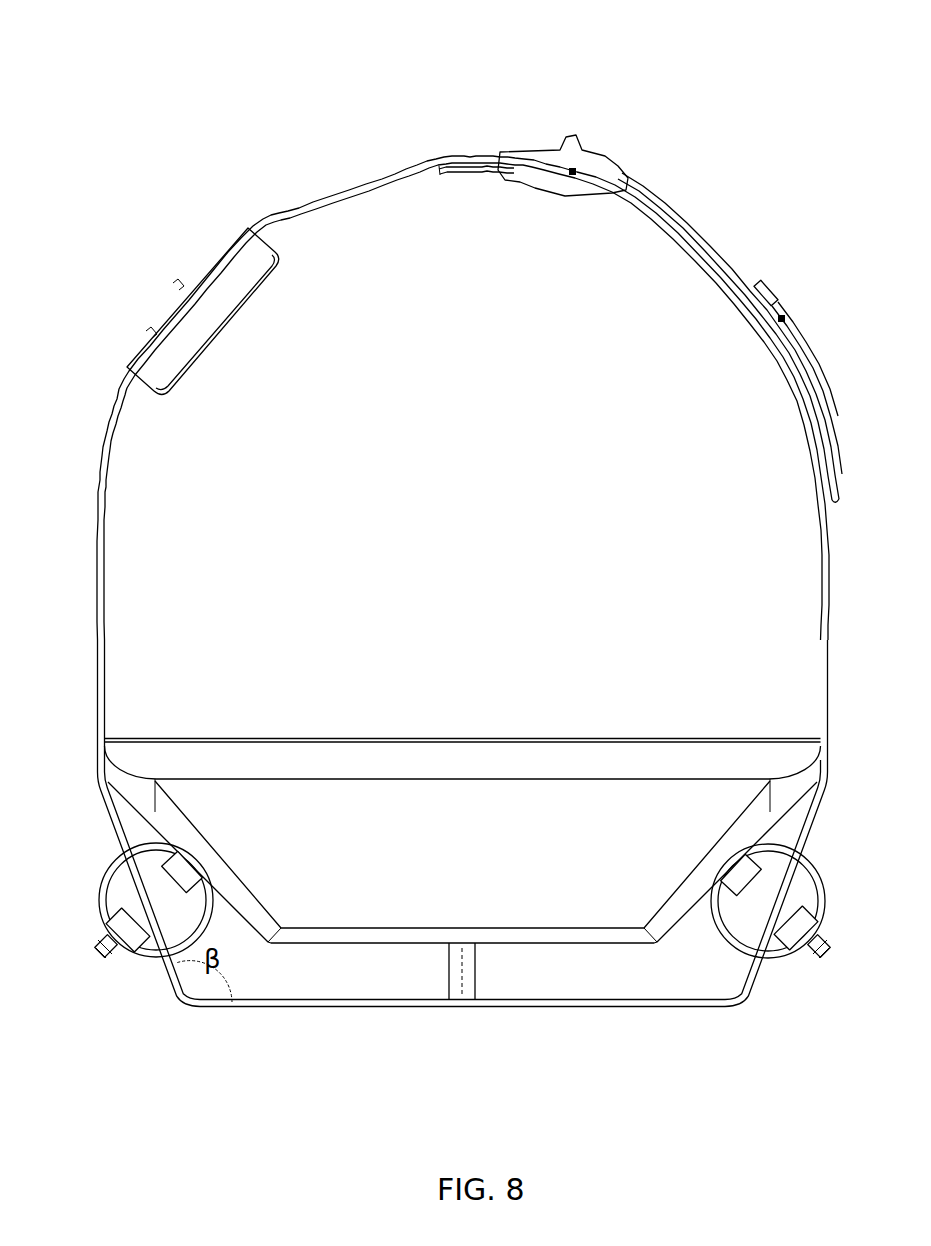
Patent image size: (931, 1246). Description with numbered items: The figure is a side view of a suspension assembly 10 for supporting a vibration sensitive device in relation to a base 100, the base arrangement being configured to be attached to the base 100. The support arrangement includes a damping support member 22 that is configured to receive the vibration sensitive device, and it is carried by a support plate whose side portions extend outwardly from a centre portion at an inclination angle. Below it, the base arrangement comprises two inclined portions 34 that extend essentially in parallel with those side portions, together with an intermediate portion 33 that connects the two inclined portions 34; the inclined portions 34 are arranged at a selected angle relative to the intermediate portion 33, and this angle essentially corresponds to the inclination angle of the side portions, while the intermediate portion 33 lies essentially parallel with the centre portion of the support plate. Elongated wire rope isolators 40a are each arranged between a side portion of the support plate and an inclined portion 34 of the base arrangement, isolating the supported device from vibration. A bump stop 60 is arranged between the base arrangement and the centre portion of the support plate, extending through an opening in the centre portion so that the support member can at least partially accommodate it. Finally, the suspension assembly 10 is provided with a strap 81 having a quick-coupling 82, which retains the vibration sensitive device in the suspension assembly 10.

The suspension assembly 10 is at (160, 1096).
The damping support member 22 is at (638, 740).
The intermediate portion 33 is at (375, 1015).
The inclined portion 34 is at (150, 995).
The elongated wire rope isolator 40a is at (102, 864).
The bump stop 60 is at (478, 975).
The strap 81 is at (328, 197).
The quick-coupling 82 is at (593, 108).
The base 100 is at (669, 1052).